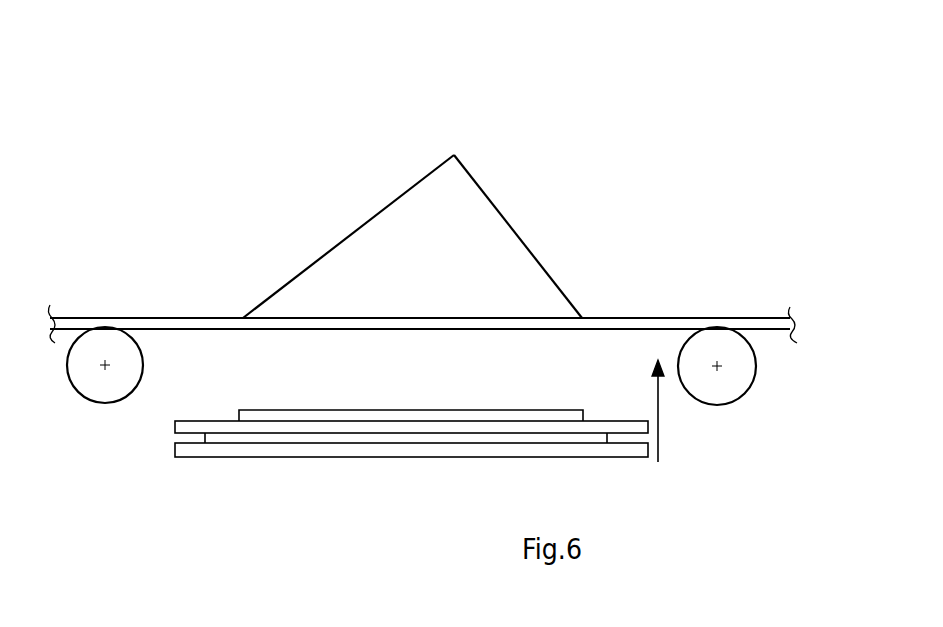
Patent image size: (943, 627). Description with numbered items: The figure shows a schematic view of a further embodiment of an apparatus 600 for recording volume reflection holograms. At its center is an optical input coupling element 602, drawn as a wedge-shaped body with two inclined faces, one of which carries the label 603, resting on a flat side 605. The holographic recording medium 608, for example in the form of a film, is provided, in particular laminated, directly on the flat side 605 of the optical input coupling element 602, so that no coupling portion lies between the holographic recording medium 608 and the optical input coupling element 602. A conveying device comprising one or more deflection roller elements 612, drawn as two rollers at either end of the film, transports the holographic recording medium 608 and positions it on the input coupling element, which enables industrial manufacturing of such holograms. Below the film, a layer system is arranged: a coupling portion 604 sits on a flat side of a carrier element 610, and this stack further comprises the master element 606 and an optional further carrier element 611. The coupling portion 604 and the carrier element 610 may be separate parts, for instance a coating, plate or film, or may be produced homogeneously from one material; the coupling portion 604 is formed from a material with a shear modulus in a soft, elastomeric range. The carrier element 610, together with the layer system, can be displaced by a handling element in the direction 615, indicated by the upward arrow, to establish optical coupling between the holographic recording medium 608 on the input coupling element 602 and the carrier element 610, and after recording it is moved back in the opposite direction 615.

The apparatus 600 is at (640, 130).
The optical input coupling element 602 is at (381, 242).
The second inclined surface of wedge 603 is at (488, 194).
The coupling portion 604 is at (260, 413).
The flat side 605 is at (357, 329).
The master element 606 is at (268, 440).
The holographic recording medium 608 is at (620, 326).
The carrier element 610 is at (352, 427).
The further carrier element 611 is at (188, 450).
The deflection roller element 612 is at (95, 399).
The direction 615 is at (658, 438).